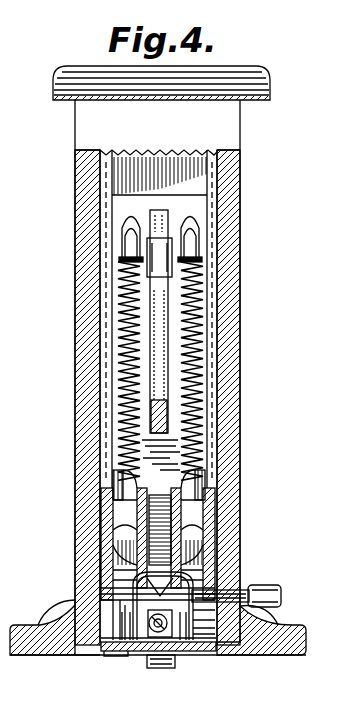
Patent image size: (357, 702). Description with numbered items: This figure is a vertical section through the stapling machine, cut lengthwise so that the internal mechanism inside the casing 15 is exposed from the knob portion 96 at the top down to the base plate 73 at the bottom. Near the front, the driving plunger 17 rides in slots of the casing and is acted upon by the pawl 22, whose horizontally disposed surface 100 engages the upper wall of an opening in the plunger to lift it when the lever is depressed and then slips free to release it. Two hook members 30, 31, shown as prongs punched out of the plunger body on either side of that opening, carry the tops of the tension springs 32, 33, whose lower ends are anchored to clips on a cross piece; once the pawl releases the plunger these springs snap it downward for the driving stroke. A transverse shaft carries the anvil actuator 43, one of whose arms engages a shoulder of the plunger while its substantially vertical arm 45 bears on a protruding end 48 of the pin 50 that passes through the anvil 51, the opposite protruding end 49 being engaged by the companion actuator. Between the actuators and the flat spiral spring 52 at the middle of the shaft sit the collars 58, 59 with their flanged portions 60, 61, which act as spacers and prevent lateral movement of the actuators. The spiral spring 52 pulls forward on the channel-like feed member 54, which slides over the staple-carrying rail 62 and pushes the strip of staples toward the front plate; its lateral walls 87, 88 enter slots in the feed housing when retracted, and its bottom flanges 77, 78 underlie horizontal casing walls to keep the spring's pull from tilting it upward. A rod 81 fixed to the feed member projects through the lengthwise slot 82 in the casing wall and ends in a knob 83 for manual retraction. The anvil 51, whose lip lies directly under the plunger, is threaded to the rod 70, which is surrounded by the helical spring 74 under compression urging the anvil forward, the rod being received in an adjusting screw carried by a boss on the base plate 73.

The knob portion 96 is at (262, 85).
The casing 15 is at (250, 305).
The driving plunger 17 is at (196, 206).
The horizontally disposed surface of the pawl 100 is at (175, 236).
The pawl 22 is at (152, 339).
The hook member 30 is at (125, 248).
The hook member 31 is at (196, 251).
The tension spring 32 is at (120, 389).
The tension spring 33 is at (196, 341).
The flanged portion 60 is at (120, 472).
The flanged portion 61 is at (188, 472).
The flat spiral spring 52 is at (212, 500).
The anvil actuator 43 is at (212, 534).
The collar 58 is at (122, 520).
The collar 59 is at (192, 520).
The feed member 54 is at (212, 556).
The lateral wall of the feed member 87 is at (133, 598).
The flange 77 is at (113, 612).
The lateral wall of the feed member 88 is at (193, 582).
The knob 83 is at (266, 590).
The protruding end of the pin 48 is at (112, 646).
The slot 82 is at (270, 642).
The arm of the anvil actuator 45 is at (100, 640).
The rod 81 is at (250, 618).
The anvil 51 is at (164, 668).
The pin 50 is at (103, 652).
The base plate 73 is at (114, 652).
The staple-carrying rail 62 is at (128, 652).
The rod 70 is at (148, 668).
The helical spring 74 is at (182, 652).
The protruding end of the pin 49 is at (208, 615).
The flange 78 is at (220, 630).